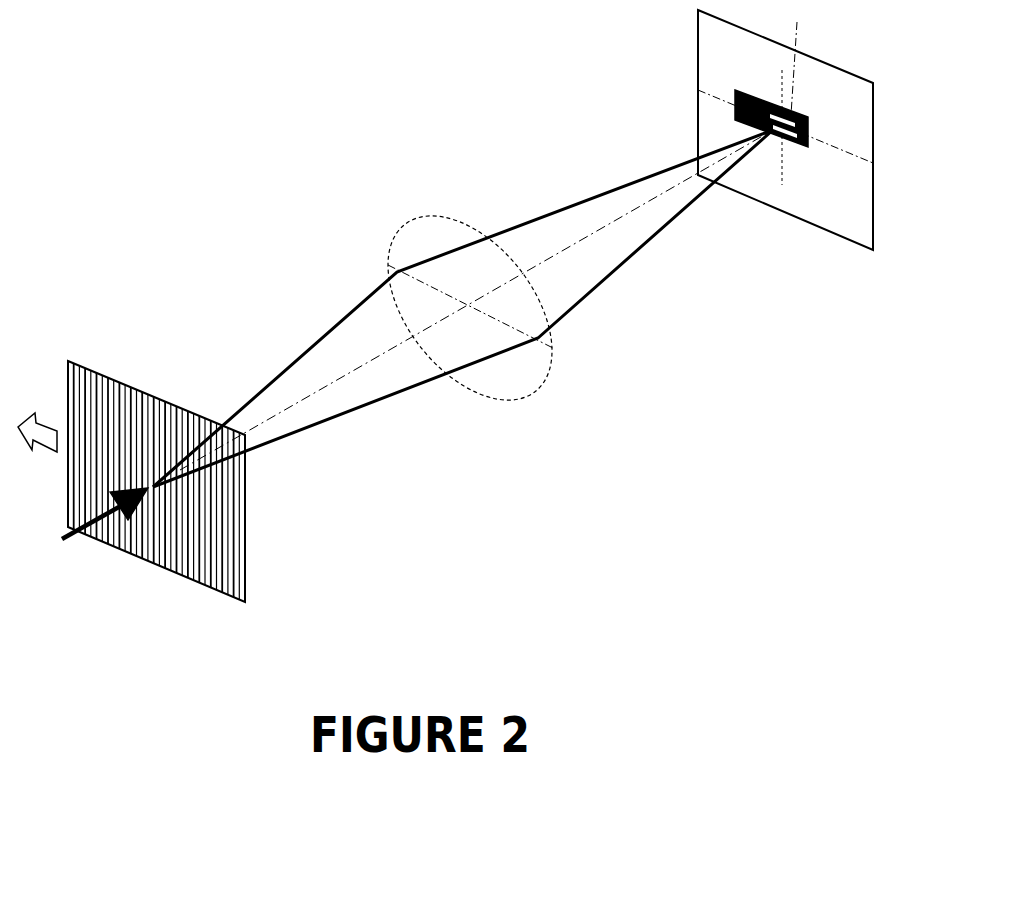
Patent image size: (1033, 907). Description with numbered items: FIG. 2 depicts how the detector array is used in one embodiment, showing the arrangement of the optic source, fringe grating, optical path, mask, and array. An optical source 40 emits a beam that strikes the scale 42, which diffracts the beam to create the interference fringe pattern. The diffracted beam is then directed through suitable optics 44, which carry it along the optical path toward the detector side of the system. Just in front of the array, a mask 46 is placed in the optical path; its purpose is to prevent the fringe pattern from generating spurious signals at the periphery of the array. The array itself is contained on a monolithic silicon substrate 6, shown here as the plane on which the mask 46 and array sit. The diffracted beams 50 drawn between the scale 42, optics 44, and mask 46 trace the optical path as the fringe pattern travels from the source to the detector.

The substrate 6 is at (785, 127).
The optical source 40 is at (91, 522).
The scale 42 is at (176, 481).
The optics 44 is at (402, 225).
The mask 46 is at (735, 97).
The diffracted light rays 50 is at (282, 372).